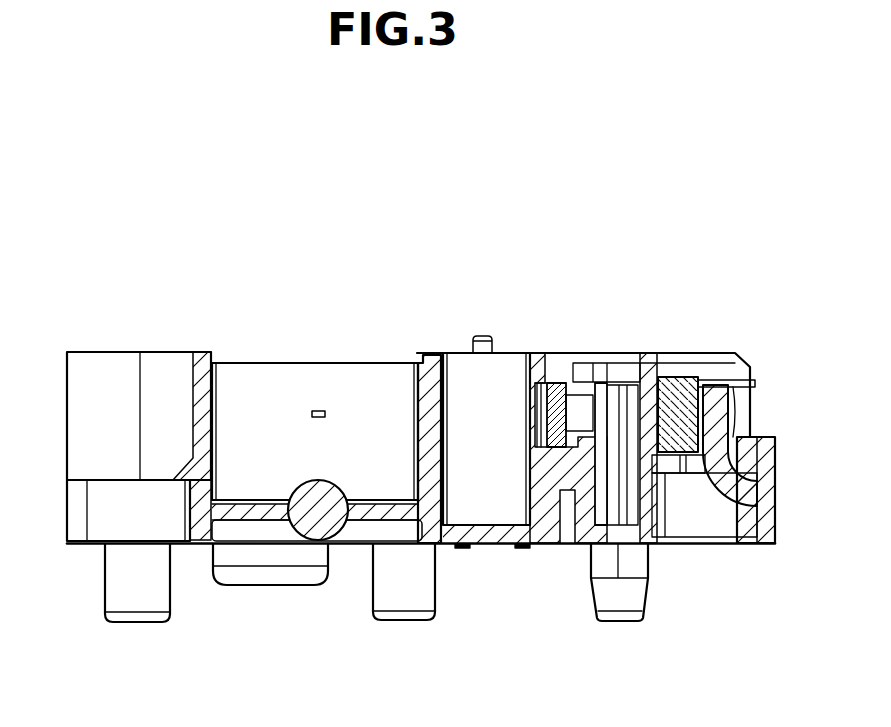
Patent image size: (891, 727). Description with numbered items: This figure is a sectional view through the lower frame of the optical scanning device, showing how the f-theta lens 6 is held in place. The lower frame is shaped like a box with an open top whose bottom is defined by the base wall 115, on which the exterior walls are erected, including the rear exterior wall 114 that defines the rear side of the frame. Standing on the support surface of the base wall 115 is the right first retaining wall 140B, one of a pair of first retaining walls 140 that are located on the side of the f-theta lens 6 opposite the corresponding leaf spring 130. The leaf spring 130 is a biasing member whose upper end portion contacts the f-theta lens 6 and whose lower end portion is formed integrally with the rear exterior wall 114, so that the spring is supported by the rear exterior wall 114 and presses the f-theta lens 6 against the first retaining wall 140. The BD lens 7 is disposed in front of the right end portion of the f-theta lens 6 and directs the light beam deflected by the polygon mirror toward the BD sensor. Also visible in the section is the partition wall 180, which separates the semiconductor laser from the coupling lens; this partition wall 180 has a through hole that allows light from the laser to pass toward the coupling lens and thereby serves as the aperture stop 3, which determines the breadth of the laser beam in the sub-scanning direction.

The partition wall 180 is at (262, 382).
The aperture stop 3 is at (318, 408).
The BD lens 7 is at (561, 383).
The right first retaining wall 140B is at (648, 367).
The first retaining wall 140 is at (698, 409).
The f-theta lens 6 is at (681, 385).
The leaf spring 130 is at (710, 405).
The rear exterior wall 114 is at (767, 467).
The base wall 115 is at (500, 535).